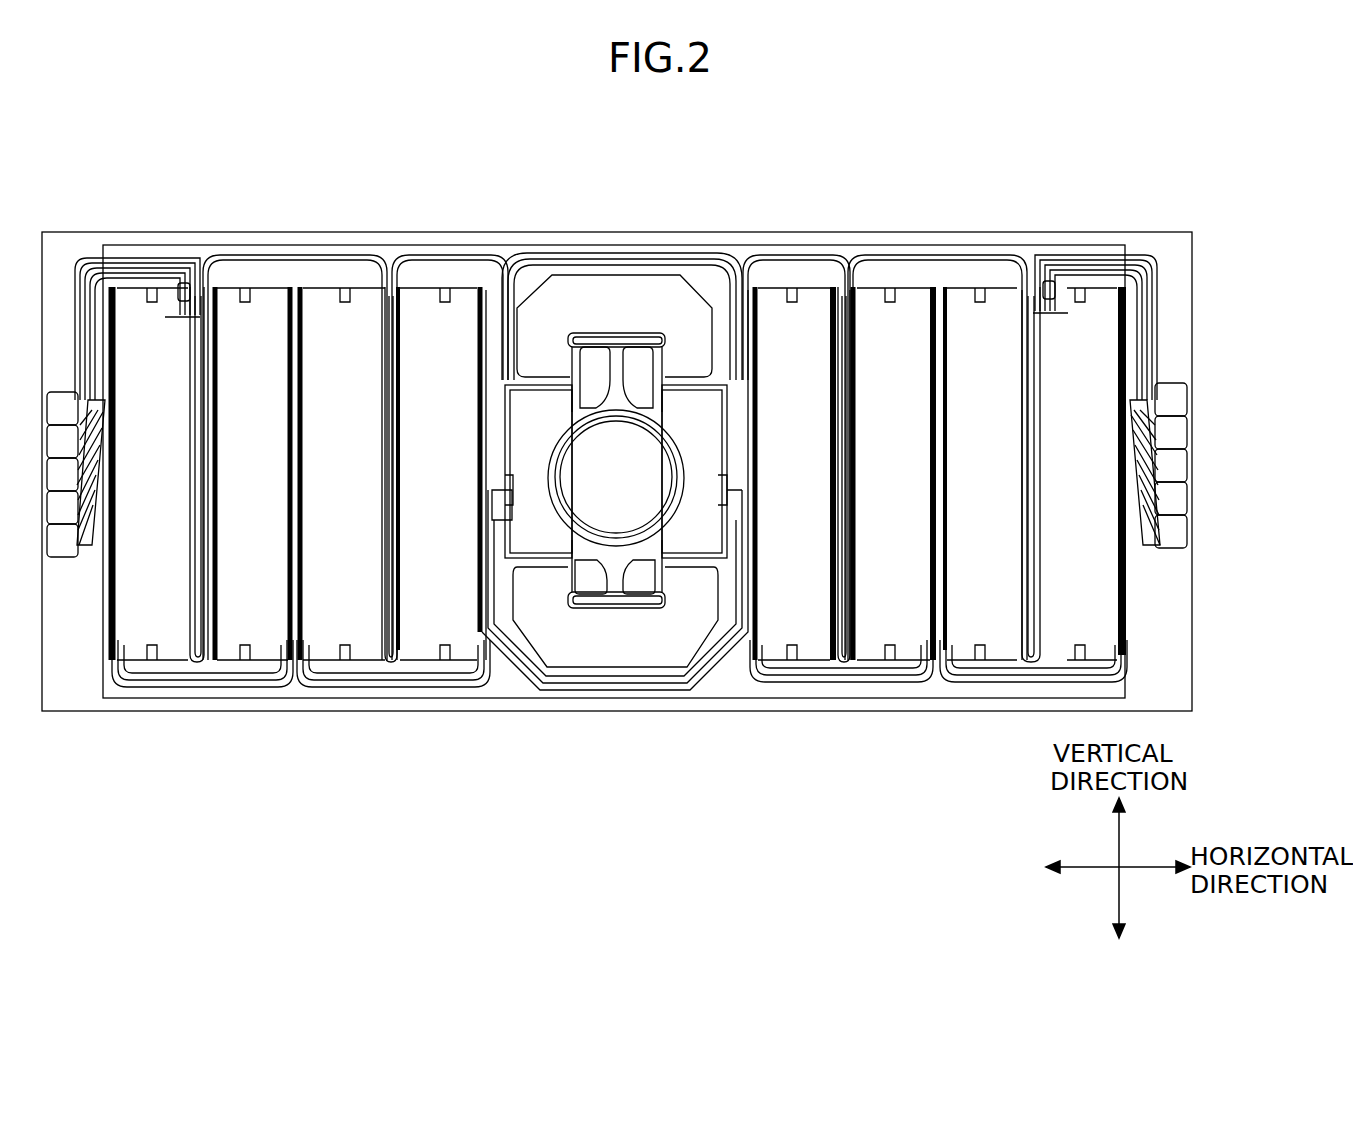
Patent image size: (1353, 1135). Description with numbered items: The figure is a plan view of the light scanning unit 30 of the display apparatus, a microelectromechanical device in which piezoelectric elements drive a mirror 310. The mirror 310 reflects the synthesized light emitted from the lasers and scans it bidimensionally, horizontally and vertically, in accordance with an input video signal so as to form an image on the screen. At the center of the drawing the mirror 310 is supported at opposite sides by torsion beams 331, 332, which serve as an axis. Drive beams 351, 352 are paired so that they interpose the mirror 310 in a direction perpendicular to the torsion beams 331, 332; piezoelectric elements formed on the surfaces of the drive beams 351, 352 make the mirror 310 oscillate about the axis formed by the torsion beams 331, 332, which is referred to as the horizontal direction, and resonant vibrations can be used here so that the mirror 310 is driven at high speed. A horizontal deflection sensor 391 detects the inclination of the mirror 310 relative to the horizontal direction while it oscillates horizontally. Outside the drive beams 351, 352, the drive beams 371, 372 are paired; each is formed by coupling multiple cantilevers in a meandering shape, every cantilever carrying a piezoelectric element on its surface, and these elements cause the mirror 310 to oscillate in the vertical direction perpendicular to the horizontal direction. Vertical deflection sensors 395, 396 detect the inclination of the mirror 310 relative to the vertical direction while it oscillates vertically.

The light scanning unit 30 is at (80, 167).
The mirror 310 is at (623, 492).
The torsion beam 331 is at (618, 560).
The torsion beam 332 is at (617, 372).
The drive beam 351 is at (700, 543).
The drive beam 352 is at (548, 543).
The drive beam 371 is at (773, 670).
The drive beam 372 is at (460, 673).
The horizontal deflection sensor 391 is at (590, 340).
The vertical deflection sensor 395 is at (1036, 288).
The vertical deflection sensor 396 is at (188, 290).